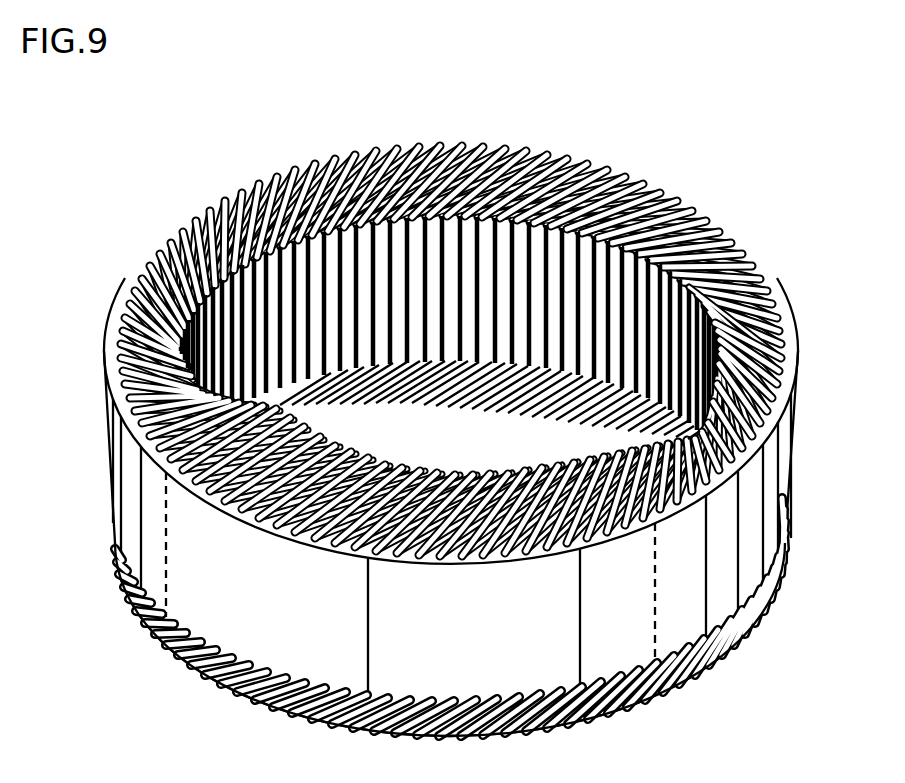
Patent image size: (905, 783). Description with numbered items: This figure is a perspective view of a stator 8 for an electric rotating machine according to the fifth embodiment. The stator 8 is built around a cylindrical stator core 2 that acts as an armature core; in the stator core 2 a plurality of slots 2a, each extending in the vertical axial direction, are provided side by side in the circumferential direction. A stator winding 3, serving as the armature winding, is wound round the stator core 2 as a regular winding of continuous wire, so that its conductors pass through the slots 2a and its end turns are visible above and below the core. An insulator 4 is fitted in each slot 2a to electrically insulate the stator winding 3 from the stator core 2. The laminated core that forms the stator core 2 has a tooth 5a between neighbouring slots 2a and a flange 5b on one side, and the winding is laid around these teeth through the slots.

The stator 8 is at (189, 141).
The stator core 2 is at (791, 435).
The slot 2a is at (773, 412).
The stator winding 3 is at (722, 211).
The insulator 4 is at (705, 487).
The tooth 5a is at (660, 503).
The flange 5b is at (548, 258).